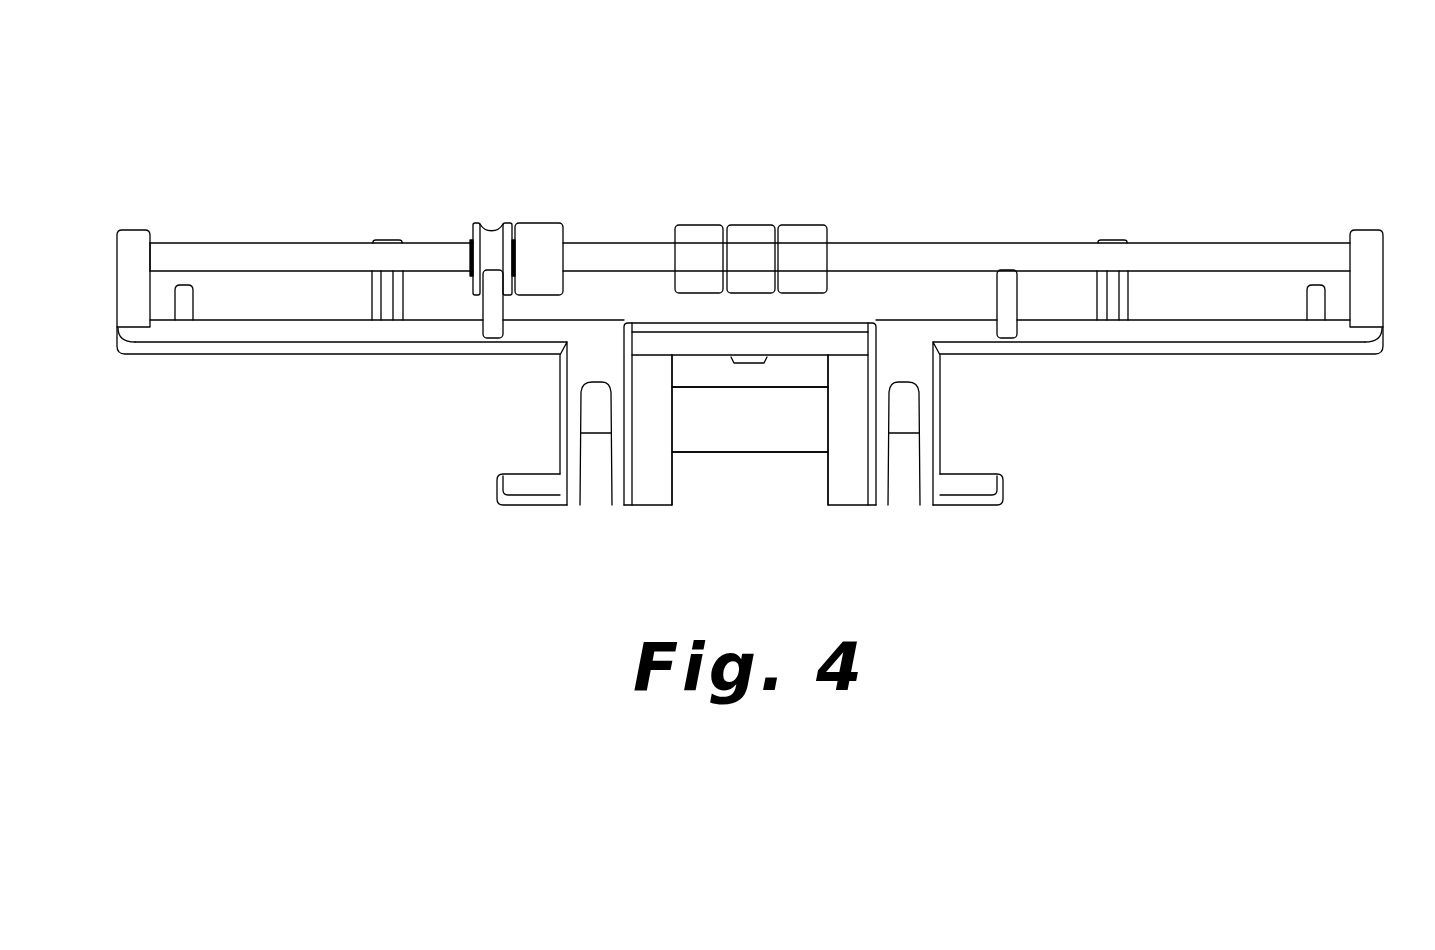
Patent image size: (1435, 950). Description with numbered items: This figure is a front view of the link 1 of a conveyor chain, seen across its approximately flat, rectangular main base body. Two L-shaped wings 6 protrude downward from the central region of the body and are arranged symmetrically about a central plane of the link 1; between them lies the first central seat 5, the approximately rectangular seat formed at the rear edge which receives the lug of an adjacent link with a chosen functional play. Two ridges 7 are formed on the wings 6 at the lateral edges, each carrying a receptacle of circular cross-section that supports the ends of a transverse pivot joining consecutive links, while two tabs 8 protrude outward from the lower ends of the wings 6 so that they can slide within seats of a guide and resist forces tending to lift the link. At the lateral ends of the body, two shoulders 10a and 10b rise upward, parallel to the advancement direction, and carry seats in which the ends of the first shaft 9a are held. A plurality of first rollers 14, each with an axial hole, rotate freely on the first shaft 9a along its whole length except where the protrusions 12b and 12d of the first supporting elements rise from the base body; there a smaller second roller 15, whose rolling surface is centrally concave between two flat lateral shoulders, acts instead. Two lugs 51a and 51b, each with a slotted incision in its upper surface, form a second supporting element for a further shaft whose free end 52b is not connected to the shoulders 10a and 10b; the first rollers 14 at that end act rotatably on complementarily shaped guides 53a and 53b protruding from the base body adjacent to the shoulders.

The link 1 is at (932, 146).
The first central seat 5 is at (733, 476).
The wings 6 is at (558, 418).
The ridges 7 is at (598, 379).
The tabs 8 is at (538, 499).
The first shaft 9a is at (1232, 263).
The shoulder 10a is at (1387, 297).
The shoulder 10b is at (108, 279).
The protrusion 12b is at (1008, 307).
The protrusion 12d is at (492, 342).
The first rollers 14 is at (545, 246).
The second roller 15 is at (492, 243).
The lug 51a is at (1128, 300).
The lug 51b is at (371, 299).
The end of the third shaft 52b is at (155, 241).
The guide 53a is at (1315, 321).
The guide 53b is at (185, 322).